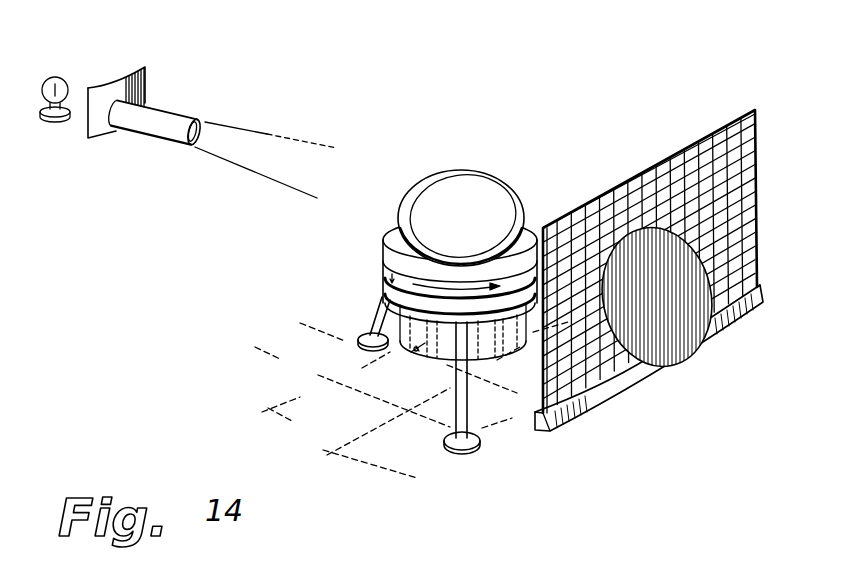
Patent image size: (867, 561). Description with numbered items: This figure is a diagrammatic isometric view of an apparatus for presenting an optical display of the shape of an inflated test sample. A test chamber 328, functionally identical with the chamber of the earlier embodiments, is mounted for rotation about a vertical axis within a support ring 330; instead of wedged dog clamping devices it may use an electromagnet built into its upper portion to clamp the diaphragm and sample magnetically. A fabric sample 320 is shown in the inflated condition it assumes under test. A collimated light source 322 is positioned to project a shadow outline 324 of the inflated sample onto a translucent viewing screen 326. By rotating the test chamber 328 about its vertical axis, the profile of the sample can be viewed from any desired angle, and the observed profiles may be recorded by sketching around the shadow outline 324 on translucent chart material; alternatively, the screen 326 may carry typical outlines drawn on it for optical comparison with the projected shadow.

The fabric sample 320 is at (503, 188).
The collimated light source 322 is at (250, 62).
The shadow outline 324 is at (707, 245).
The translucent viewing screen 326 is at (758, 203).
The test chamber 328 is at (378, 258).
The support ring 330 is at (383, 290).